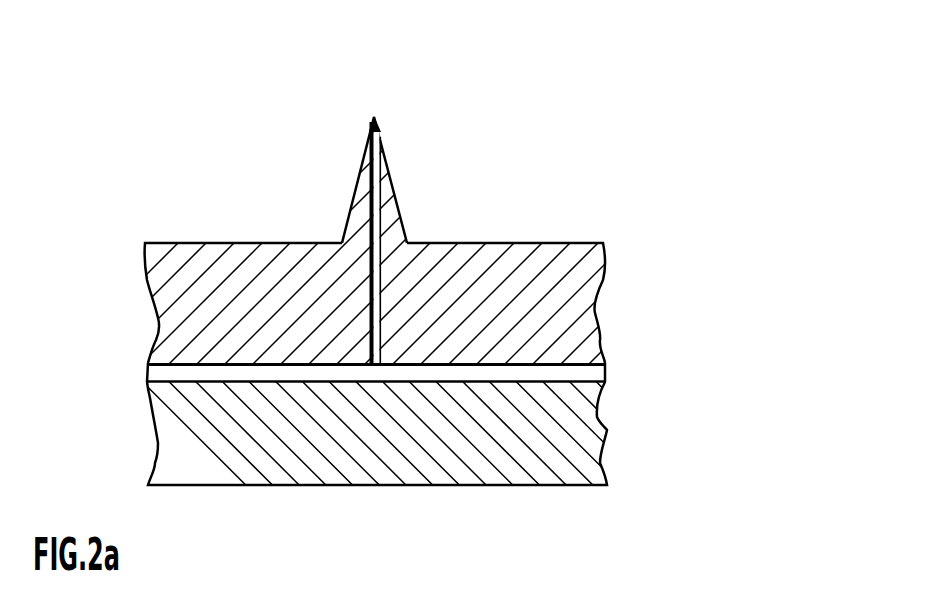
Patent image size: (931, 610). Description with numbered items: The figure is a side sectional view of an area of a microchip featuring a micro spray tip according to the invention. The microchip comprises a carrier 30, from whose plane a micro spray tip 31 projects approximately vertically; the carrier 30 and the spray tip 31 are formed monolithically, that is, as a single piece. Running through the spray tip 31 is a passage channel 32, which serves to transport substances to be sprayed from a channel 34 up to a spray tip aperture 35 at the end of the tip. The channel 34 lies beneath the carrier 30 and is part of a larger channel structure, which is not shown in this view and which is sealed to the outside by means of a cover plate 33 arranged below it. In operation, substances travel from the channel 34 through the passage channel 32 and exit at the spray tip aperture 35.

The carrier 30 is at (149, 289).
The micro spray tip 31 is at (357, 193).
The passage channel 32 is at (375, 292).
The cover plate 33 is at (160, 465).
The channel 34 is at (148, 368).
The spray tip aperture 35 is at (375, 99).